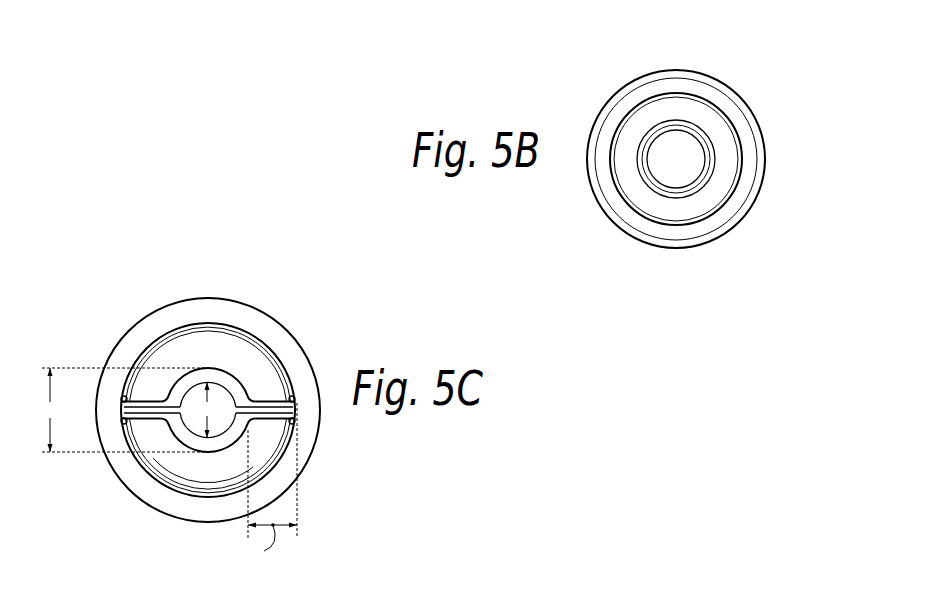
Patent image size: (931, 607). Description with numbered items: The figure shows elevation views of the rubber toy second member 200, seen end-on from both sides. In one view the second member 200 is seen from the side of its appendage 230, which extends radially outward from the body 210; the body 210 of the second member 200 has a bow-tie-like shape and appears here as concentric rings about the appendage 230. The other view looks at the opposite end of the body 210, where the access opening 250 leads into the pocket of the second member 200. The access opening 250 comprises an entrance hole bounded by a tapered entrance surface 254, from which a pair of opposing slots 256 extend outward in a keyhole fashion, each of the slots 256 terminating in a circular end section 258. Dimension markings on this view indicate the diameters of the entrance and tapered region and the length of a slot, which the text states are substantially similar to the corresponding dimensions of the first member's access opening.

In FIG. 5B, the second member 200 is at (773, 97).
In FIG. 5C, the second member 200 is at (282, 310).
In FIG. 5B, the body 210 is at (648, 75).
In FIG. 5B, the appendage 230 is at (677, 110).
In FIG. 5C, the access opening 250 is at (202, 453).
In FIG. 5C, the tapered entrance surface 254 is at (210, 370).
In FIG. 5C, the opposing slots 256 is at (157, 400).
In FIG. 5C, the circular end sections 258 is at (125, 415).